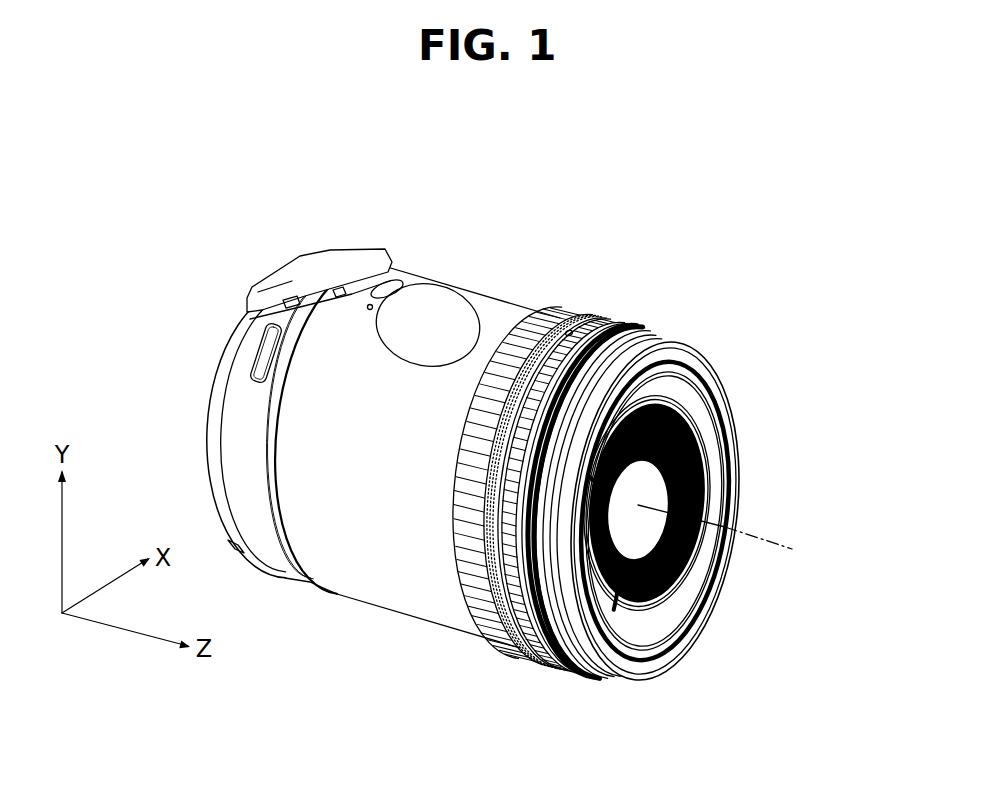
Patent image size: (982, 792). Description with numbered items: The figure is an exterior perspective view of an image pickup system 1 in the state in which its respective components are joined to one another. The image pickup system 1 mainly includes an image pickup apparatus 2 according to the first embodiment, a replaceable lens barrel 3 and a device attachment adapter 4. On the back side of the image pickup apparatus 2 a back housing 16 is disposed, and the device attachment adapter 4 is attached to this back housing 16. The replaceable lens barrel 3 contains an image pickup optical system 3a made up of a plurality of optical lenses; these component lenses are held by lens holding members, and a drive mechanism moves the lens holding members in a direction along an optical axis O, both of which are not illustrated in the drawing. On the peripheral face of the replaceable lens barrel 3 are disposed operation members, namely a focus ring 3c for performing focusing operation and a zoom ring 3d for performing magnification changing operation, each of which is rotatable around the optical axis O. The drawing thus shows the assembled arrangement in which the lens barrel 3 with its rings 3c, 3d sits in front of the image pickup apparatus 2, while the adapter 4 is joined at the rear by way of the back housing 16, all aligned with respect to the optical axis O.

The image pickup system 1 is at (626, 194).
The image pickup apparatus 2 is at (440, 277).
The replaceable lens barrel 3 is at (592, 324).
The image pickup optical system 3a is at (651, 481).
The focus ring 3c is at (688, 343).
The zoom ring 3d is at (648, 328).
The device attachment adapter 4 is at (368, 255).
The back housing 16 is at (275, 458).
The optical axis O is at (758, 540).